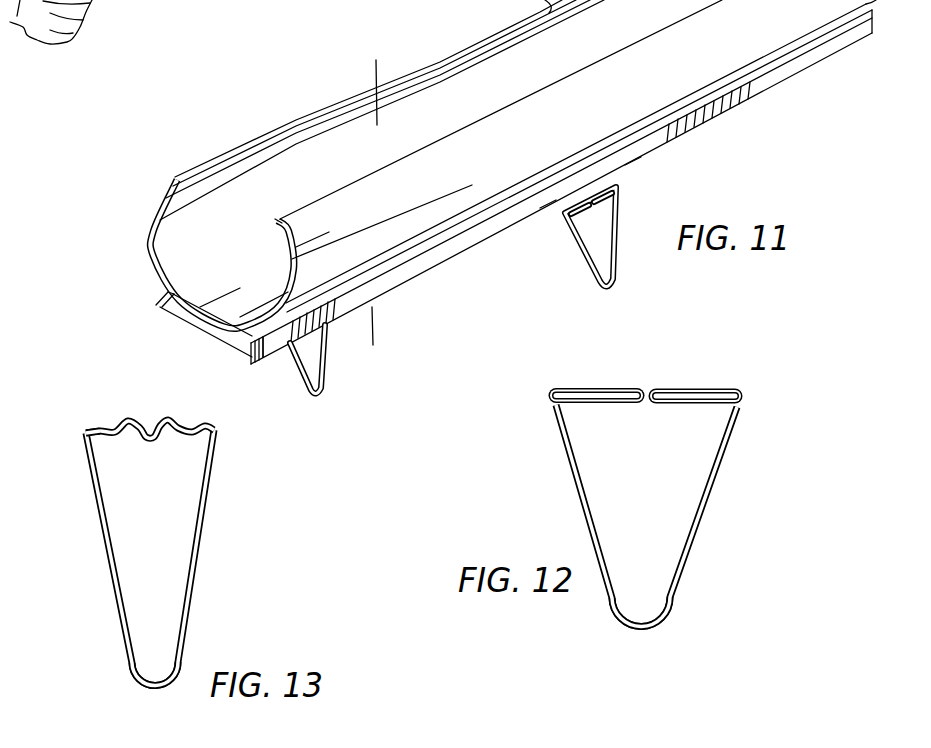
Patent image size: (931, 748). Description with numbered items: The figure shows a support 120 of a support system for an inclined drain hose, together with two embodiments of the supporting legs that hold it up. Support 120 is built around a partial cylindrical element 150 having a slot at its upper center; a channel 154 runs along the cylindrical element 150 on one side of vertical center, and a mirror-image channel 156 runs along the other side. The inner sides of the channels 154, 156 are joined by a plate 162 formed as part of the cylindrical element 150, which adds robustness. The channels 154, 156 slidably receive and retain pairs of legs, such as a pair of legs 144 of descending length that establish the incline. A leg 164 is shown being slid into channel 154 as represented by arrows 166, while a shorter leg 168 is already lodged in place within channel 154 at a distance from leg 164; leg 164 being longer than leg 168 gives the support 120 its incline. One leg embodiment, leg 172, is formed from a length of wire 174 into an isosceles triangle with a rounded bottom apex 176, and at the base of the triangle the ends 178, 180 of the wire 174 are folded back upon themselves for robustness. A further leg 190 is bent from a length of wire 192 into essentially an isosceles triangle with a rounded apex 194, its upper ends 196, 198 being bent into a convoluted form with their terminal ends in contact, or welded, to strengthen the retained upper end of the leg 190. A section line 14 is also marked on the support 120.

In FIG. 11, the section line 14 is at (369, 73).
In FIG. 11, the support 120 is at (524, 6).
In FIG. 11, the pair of legs 144 is at (84, 22).
In FIG. 11, the partial cylindrical element 150 is at (211, 161).
In FIG. 11, the channel 154 is at (258, 352).
In FIG. 11, the channel 156 is at (157, 299).
In FIG. 11, the plate 162 is at (203, 336).
In FIG. 11, the leg 164 is at (623, 253).
In FIG. 11, the arrows 166 is at (549, 213).
In FIG. 11, the leg 168 is at (327, 371).
In FIG. 12, the leg 172 is at (686, 509).
In FIG. 12, the length of wire 174 is at (694, 537).
In FIG. 12, the rounded bottom apex 176 is at (658, 620).
In FIG. 12, the end of wire 178 is at (690, 405).
In FIG. 12, the end of wire 180 is at (612, 405).
In FIG. 13, the leg 190 is at (163, 547).
In FIG. 13, the length of wire 192 is at (210, 493).
In FIG. 13, the rounded apex 194 is at (147, 690).
In FIG. 13, the upper end of wire 196 is at (177, 422).
In FIG. 13, the upper end of wire 198 is at (100, 430).